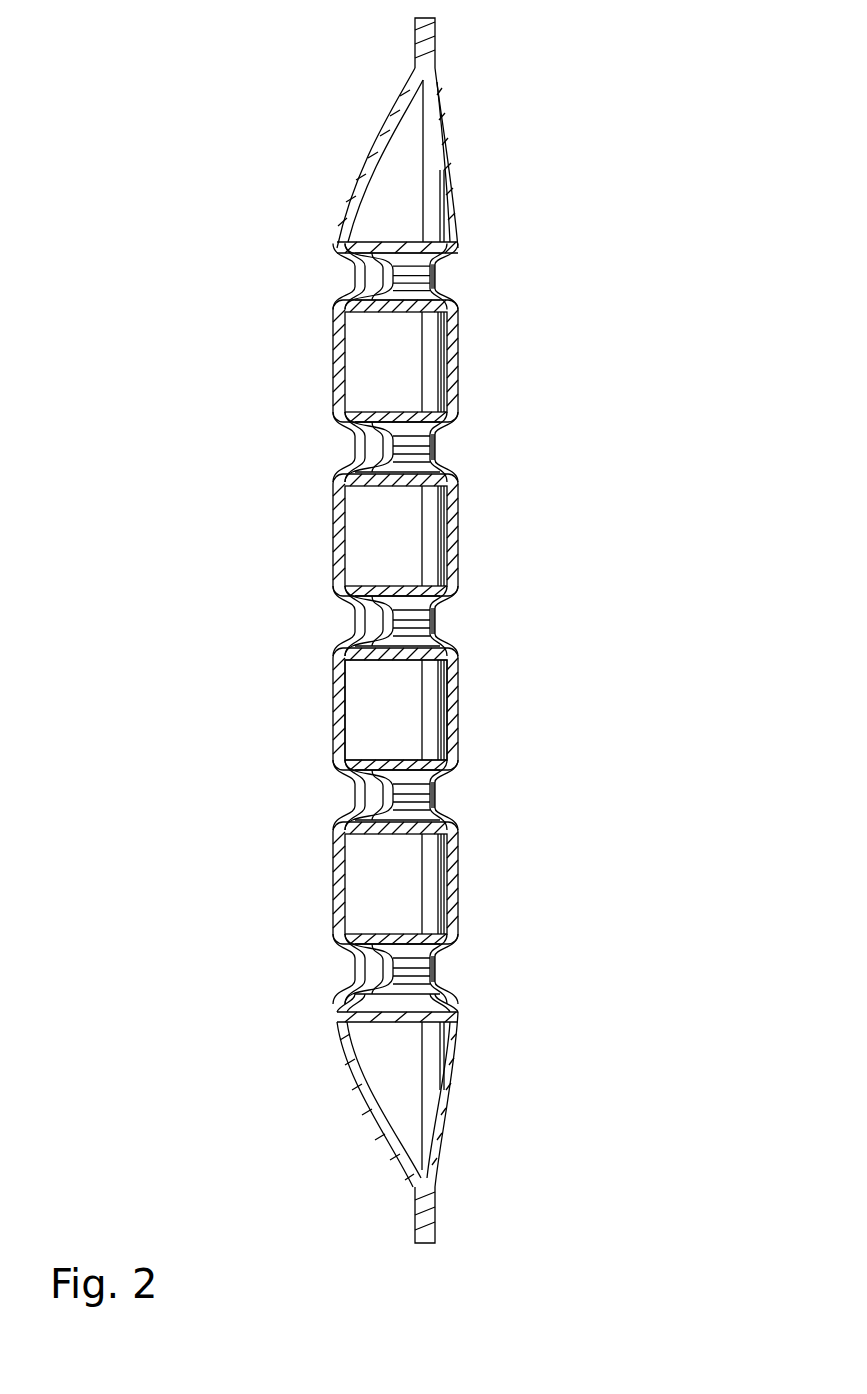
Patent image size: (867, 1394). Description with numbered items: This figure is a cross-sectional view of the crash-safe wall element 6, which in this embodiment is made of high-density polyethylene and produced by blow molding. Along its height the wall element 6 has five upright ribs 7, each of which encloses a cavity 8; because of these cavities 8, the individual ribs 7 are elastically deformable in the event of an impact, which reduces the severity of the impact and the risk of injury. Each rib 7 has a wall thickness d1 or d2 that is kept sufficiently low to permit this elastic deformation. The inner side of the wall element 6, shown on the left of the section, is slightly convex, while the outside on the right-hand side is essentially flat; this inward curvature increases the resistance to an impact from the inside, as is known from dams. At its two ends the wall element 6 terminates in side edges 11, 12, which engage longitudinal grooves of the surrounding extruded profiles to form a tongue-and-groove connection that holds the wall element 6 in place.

The crash-safe wall element 6 is at (519, 644).
The rib 7 is at (328, 727).
The cavity 8 is at (390, 720).
The side edge 11 is at (427, 38).
The side edge 12 is at (430, 1225).
The wall thickness d1 is at (377, 557).
The wall thickness d2 is at (415, 525).